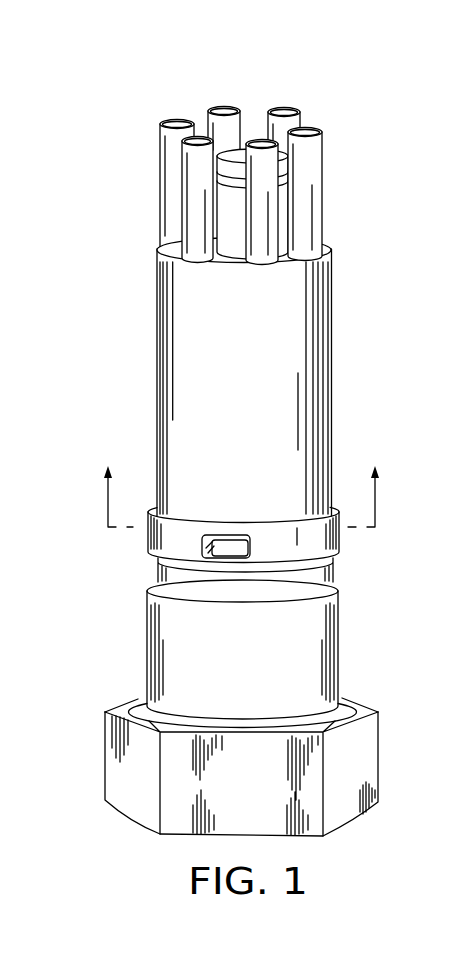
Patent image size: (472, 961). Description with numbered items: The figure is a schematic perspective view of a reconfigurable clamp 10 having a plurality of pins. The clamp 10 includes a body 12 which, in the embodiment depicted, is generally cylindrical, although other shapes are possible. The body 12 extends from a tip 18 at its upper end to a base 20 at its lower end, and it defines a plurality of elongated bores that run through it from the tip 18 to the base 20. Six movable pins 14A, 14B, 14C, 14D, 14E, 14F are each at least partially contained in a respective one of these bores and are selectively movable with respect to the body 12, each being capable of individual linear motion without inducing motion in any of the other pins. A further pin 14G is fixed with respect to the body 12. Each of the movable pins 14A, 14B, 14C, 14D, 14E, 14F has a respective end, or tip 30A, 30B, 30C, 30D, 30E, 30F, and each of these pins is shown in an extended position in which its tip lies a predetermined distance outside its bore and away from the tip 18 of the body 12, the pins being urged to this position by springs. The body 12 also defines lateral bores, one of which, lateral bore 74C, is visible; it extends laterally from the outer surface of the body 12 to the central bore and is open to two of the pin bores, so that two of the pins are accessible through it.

The reconfigurable clamp 10 is at (89, 175).
The body 12 is at (152, 373).
The pin 14A is at (259, 134).
The pin 14B is at (332, 134).
The pin 14C is at (364, 165).
The pin 14D is at (316, 213).
The pin 14E is at (140, 200).
The pin 14F is at (149, 138).
The fixed pin 14G is at (232, 158).
The tip of the body 18 is at (327, 238).
The base of the body 20 is at (382, 758).
The tip 30A is at (233, 102).
The tip 30B is at (300, 113).
The tip 30C is at (310, 118).
The tip 30D is at (272, 145).
The tip 30E is at (200, 148).
The tip 30F is at (180, 118).
The lateral bore 74C is at (228, 540).